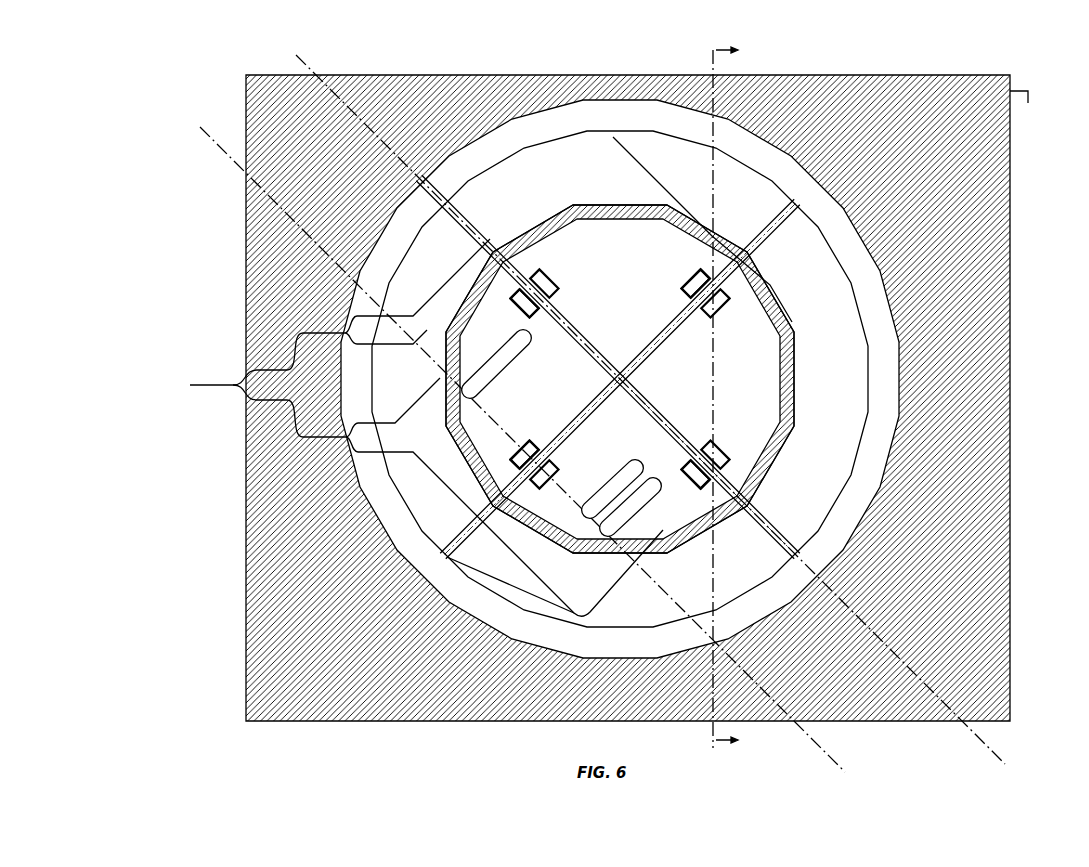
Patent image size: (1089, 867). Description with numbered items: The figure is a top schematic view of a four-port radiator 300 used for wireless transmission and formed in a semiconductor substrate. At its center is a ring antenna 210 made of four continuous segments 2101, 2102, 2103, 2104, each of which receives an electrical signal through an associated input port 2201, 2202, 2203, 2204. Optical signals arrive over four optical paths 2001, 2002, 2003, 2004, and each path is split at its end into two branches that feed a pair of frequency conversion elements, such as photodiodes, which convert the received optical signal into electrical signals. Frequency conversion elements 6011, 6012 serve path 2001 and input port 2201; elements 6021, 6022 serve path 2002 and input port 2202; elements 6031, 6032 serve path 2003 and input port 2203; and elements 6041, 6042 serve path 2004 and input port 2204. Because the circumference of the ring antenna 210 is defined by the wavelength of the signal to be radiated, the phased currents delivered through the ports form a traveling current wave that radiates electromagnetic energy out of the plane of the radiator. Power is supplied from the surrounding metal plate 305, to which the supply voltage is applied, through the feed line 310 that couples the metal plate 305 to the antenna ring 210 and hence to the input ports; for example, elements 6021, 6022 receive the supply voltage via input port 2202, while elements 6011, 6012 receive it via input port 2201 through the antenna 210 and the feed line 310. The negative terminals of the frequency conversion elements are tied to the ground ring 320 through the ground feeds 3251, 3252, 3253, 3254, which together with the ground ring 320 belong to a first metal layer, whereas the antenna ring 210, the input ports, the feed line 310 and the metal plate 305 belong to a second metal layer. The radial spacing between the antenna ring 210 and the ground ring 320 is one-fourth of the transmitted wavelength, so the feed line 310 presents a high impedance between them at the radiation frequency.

The four-port radiator 300 is at (629, 398).
The metal plate 305 is at (425, 75).
The Vdd feed line 310 is at (465, 220).
The ground ring 320 is at (852, 283).
The ring antenna 210 is at (778, 443).
The optical path 2001 is at (702, 229).
The optical path 2002 is at (340, 312).
The optical path 2003 is at (351, 443).
The optical path 2004 is at (555, 564).
The continuous segment 2101 is at (761, 379).
The continuous segment 2102 is at (620, 230).
The continuous segment 2103 is at (469, 379).
The continuous segment 2104 is at (620, 521).
The input port 2201 is at (696, 273).
The input port 2202 is at (509, 297).
The input port 2203 is at (509, 460).
The input port 2204 is at (696, 485).
The ground feed 3251 is at (708, 290).
The ground feed 3252 is at (561, 319).
The ground feed 3253 is at (532, 467).
The ground feed 3254 is at (710, 469).
The frequency conversion element 6011 is at (672, 291).
The frequency conversion element 6012 is at (704, 323).
The frequency conversion element 6021 is at (511, 313).
The frequency conversion element 6022 is at (561, 280).
The frequency conversion element 6031 is at (573, 473).
The frequency conversion element 6032 is at (532, 436).
The frequency conversion element 6041 is at (731, 446).
The frequency conversion element 6042 is at (673, 473).